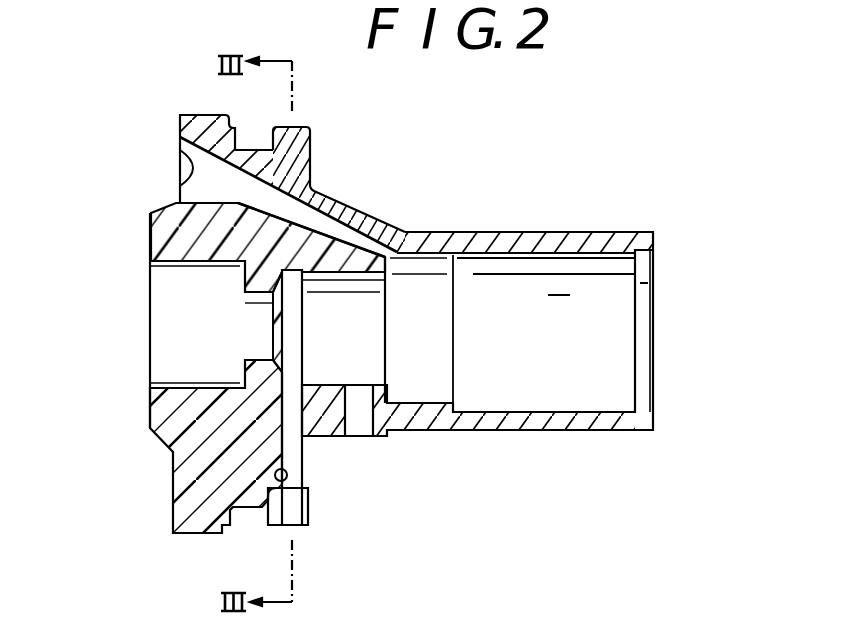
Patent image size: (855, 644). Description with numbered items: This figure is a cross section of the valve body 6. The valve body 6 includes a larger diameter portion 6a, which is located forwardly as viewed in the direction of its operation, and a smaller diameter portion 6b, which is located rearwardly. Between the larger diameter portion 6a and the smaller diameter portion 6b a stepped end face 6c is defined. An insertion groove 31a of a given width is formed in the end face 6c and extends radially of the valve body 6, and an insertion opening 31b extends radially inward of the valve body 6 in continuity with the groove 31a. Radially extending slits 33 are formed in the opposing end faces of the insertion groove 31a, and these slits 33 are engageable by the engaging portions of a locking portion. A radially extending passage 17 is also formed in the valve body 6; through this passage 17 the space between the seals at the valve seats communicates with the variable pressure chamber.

The valve body 6 is at (143, 420).
The larger diameter portion 6a is at (202, 115).
The smaller diameter portion 6b is at (552, 232).
The stepped end face 6c is at (312, 158).
The radially extending passage 17 is at (358, 416).
The insertion groove 31a is at (308, 518).
The insertion opening 31b is at (293, 422).
The slits 33 is at (284, 481).